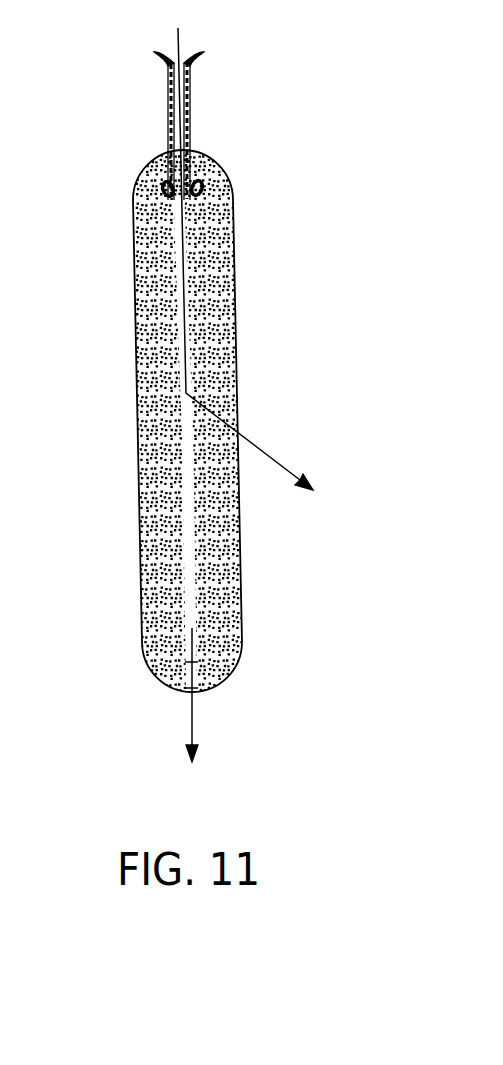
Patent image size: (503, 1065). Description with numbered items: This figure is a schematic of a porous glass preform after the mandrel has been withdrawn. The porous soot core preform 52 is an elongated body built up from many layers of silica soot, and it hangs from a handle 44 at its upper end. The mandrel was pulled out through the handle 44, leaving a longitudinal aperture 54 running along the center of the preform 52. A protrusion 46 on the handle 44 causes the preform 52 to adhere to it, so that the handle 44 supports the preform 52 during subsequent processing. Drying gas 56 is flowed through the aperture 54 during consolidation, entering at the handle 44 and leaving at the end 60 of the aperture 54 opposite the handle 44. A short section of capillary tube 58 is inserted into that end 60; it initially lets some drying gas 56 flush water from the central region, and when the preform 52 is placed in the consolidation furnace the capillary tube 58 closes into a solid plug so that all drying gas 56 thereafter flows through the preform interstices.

The handle 44 is at (192, 108).
The protrusion 46 is at (200, 193).
The porous soot core preform 52 is at (125, 313).
The longitudinal aperture 54 is at (187, 530).
The drying gas 56 is at (273, 460).
The capillary tube 58 is at (187, 683).
The end of the porous preform aperture 60 is at (240, 662).